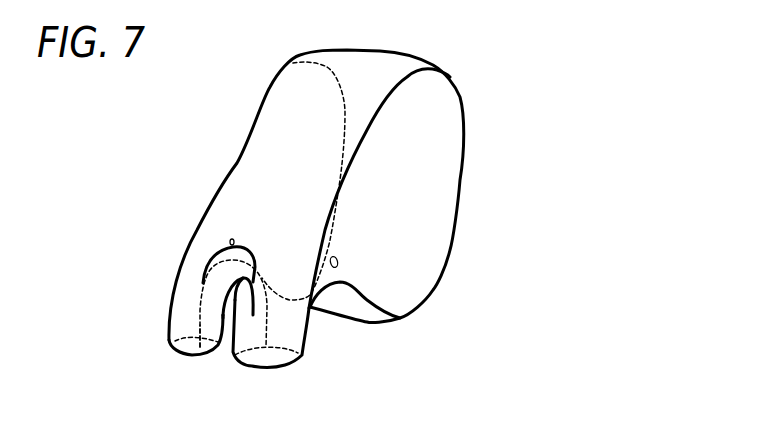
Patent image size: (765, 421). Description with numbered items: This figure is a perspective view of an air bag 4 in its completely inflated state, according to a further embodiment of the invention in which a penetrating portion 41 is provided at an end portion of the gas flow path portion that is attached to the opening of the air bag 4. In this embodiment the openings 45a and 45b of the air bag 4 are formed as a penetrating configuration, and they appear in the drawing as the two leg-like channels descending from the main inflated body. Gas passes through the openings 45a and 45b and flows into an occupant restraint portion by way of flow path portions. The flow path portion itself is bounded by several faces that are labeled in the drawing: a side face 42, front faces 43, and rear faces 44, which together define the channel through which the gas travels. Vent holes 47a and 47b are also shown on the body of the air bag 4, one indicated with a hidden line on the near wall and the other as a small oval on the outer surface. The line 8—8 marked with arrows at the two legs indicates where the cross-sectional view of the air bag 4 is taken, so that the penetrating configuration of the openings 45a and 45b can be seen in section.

The air bag 4 is at (490, 99).
The section line 8— 8 is at (160, 283).
The penetrating portion 41 is at (222, 309).
The side face 42 is at (210, 325).
The front face 43 is at (212, 270).
The rear face 44 is at (227, 328).
The opening 45a is at (175, 352).
The opening 45b is at (282, 358).
The vent hole 47a is at (231, 242).
The vent hole 47b is at (338, 262).